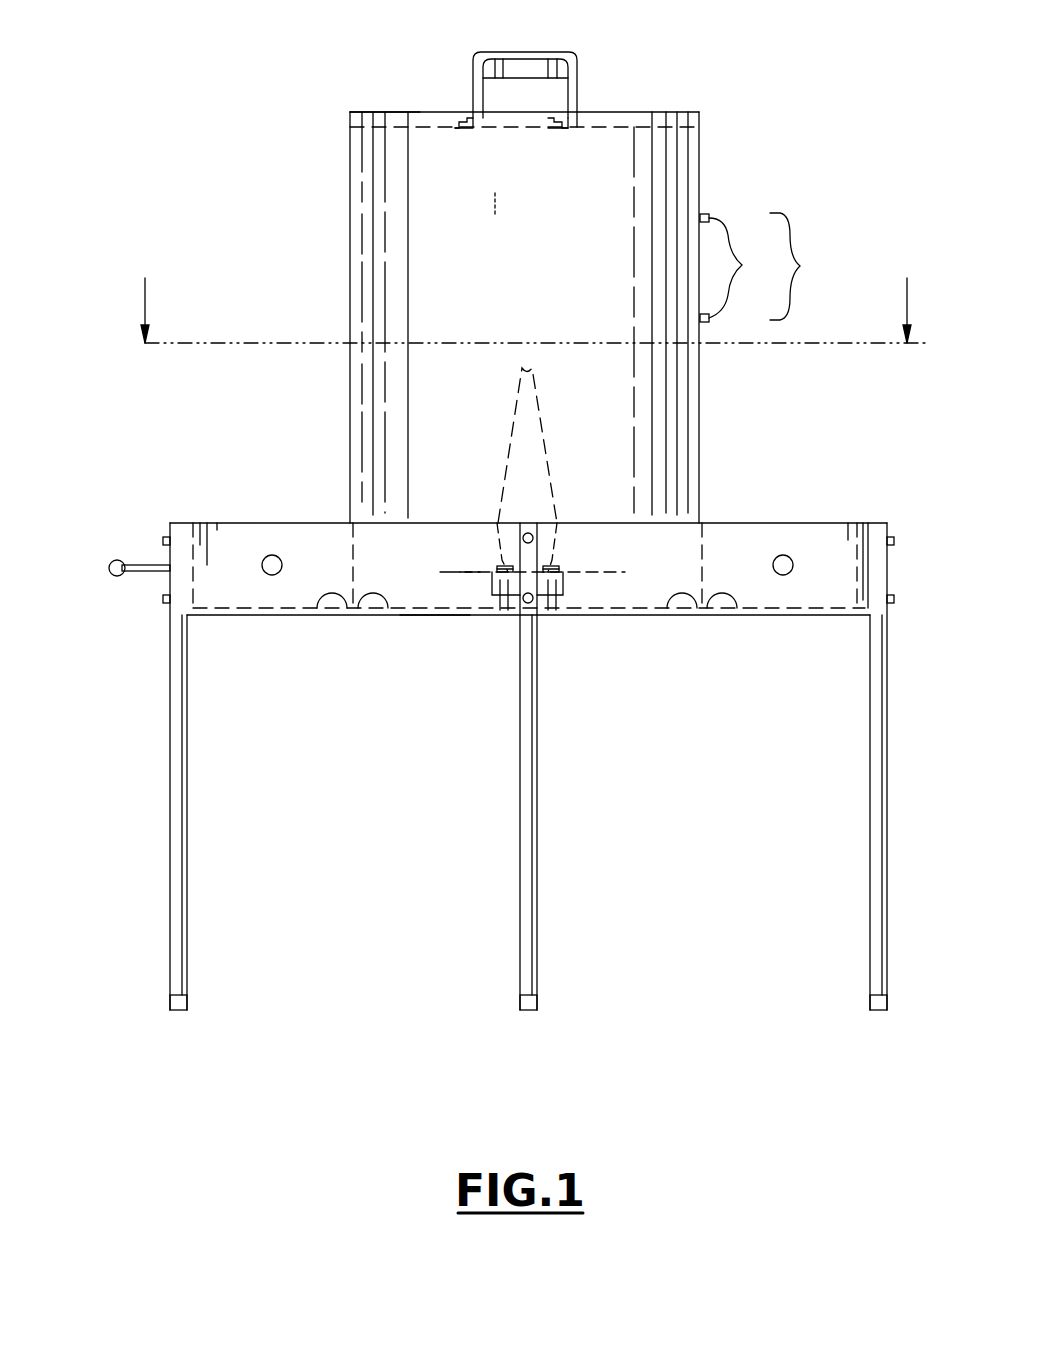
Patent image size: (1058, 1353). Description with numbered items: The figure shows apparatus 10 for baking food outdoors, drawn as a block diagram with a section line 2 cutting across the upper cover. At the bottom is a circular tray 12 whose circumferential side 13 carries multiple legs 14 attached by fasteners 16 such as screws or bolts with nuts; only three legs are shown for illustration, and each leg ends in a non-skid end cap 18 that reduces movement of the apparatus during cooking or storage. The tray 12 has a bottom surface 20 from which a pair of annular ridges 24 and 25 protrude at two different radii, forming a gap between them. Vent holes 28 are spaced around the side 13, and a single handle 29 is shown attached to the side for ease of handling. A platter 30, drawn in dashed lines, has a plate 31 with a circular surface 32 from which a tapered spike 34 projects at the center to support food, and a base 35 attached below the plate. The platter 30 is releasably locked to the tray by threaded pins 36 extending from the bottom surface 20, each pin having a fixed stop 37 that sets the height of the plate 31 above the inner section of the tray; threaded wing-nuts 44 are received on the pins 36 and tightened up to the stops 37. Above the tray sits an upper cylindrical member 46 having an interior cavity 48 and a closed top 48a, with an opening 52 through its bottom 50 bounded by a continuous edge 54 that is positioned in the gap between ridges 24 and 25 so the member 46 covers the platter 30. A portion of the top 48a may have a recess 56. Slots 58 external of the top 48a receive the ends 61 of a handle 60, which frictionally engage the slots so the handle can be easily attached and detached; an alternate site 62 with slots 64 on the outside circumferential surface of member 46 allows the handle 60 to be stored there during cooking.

The apparatus 10 is at (507, 31).
The section line 2- 2 is at (534, 327).
The circular tray 12 is at (278, 523).
The circumferential side 13 is at (183, 557).
The legs 14 is at (170, 800).
The fasteners 16 is at (894, 540).
The end cap 18 is at (170, 1006).
The bottom surface 20 is at (250, 608).
The annular ridge 24 is at (368, 594).
The annular ridge 25 is at (338, 594).
The vent holes 28 is at (263, 562).
The handle 29 is at (109, 568).
The platter 30 is at (536, 575).
The plate 31 is at (445, 572).
The circular surface 32 is at (472, 572).
The spike 34 is at (550, 445).
The base 35 is at (563, 585).
The pins 36 is at (544, 505).
The stop 37 is at (500, 600).
The wing-nuts 44 is at (553, 566).
The upper cylindrical member 46 is at (350, 240).
The interior cavity 48 is at (487, 298).
The closed top 48a is at (381, 112).
The bottom 50 is at (437, 616).
The opening 52 is at (412, 608).
The continuous edge 54 is at (353, 615).
The recess 56 is at (643, 112).
The slots 58 is at (473, 117).
The handle 60 is at (578, 68).
The ends 61 is at (468, 130).
The site 62 is at (796, 266).
The slots 64 is at (730, 268).